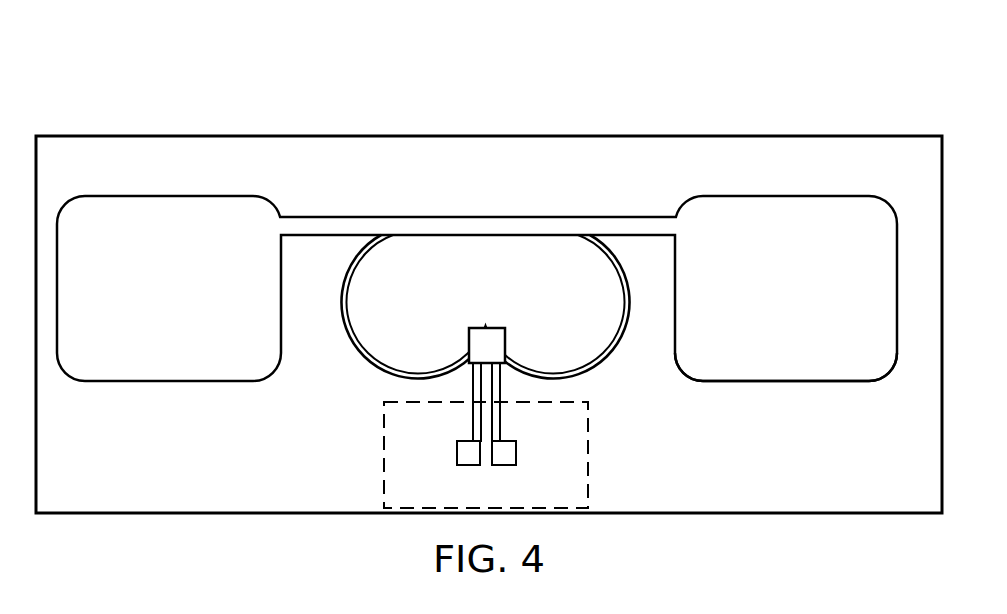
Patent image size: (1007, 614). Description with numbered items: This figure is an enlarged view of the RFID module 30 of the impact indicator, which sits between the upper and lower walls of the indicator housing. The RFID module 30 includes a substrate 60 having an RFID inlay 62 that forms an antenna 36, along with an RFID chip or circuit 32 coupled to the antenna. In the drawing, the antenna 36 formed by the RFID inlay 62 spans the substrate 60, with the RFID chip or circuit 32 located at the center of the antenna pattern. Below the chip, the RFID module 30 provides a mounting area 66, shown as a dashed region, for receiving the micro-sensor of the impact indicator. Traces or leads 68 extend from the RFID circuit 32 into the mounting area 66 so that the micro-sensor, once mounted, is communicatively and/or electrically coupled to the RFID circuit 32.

The RFID module 30 is at (593, 78).
The RFID chip or circuit 32 is at (483, 337).
The antenna 36 is at (787, 372).
The substrate 60 is at (315, 135).
The RFID inlay 62 is at (833, 383).
The mounting area 66 is at (383, 472).
The traces or leads 68 is at (517, 452).